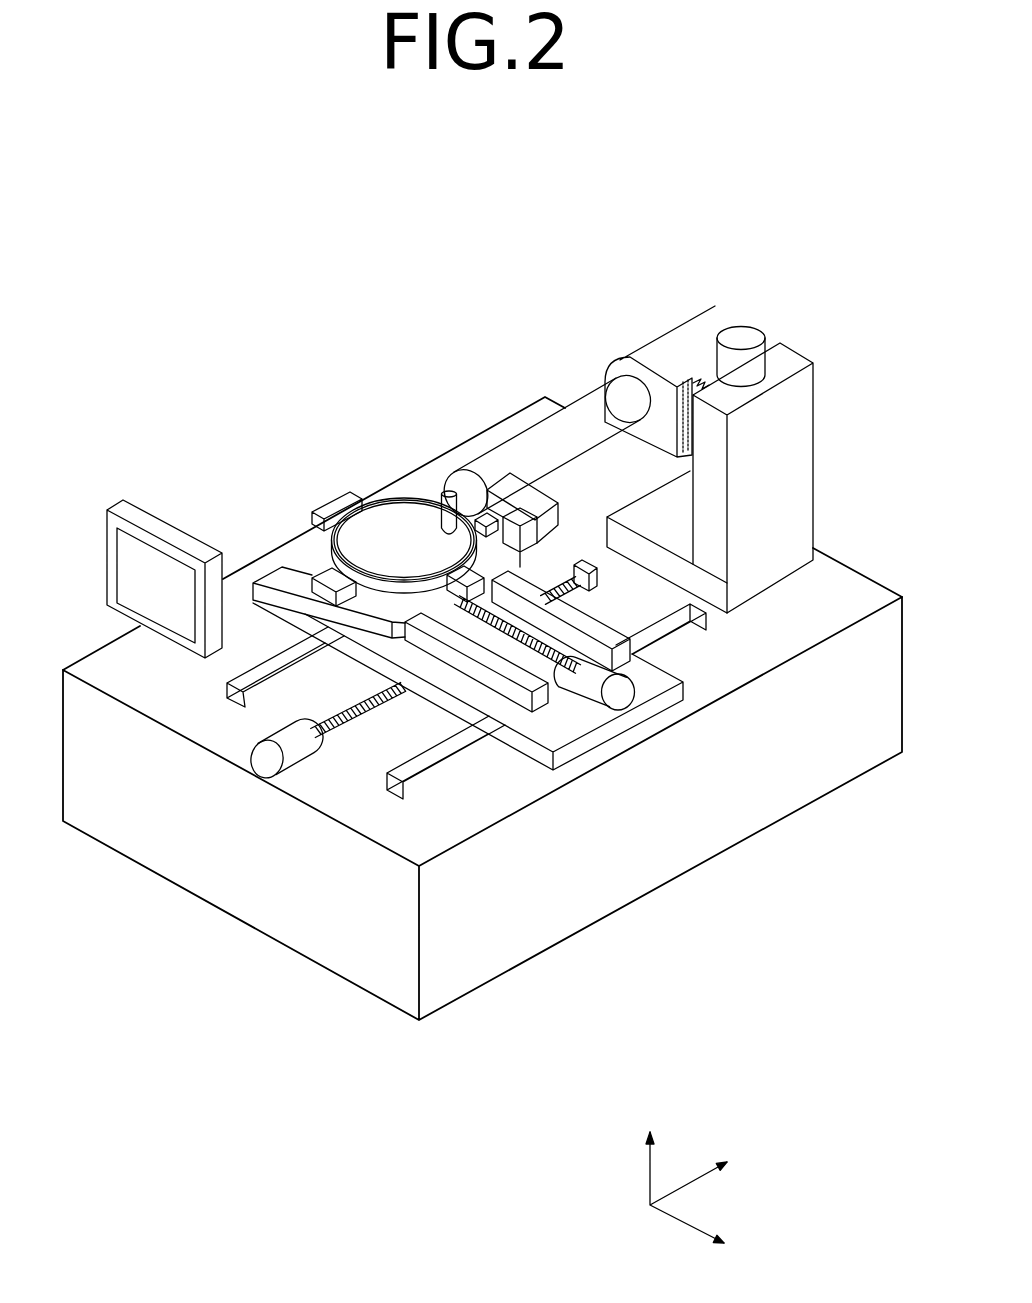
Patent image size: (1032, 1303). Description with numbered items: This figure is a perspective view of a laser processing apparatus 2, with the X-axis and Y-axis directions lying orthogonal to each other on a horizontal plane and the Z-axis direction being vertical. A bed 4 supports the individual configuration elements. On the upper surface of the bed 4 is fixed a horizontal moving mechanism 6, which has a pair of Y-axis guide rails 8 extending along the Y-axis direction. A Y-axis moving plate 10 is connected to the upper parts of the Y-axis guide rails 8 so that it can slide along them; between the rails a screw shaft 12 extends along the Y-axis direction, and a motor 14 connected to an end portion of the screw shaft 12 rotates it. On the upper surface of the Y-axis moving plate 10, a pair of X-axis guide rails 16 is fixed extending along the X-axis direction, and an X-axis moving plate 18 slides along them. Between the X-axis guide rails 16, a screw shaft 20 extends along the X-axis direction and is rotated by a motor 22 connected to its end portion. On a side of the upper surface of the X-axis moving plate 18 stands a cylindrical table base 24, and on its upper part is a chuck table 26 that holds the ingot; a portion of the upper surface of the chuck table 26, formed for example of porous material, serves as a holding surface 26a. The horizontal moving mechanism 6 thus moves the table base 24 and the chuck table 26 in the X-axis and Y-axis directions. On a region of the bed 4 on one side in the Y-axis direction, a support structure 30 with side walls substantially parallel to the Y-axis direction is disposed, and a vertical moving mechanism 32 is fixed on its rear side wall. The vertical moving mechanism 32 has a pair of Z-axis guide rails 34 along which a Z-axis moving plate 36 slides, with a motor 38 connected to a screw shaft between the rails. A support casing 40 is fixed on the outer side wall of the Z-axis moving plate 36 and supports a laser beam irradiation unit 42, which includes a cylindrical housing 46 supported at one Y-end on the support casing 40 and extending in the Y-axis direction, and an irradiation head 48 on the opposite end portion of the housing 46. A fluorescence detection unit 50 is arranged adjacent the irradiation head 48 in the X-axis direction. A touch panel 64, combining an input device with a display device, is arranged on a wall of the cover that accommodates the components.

The laser processing apparatus 2 is at (400, 1050).
The bed 4 is at (865, 590).
The horizontal moving mechanism 6 is at (637, 794).
The Y-axis guide rails 8 is at (255, 686).
The Y-axis moving plate 10 is at (517, 742).
The screw shaft 12 is at (337, 712).
The motor 14 is at (267, 765).
The X-axis guide rails 16 is at (553, 710).
The X-axis moving plate 18 is at (388, 608).
The screw shaft 20 is at (565, 706).
The motor 22 is at (623, 694).
The table base 24 is at (413, 593).
The chuck table 26 is at (388, 489).
The holding surface 26a is at (400, 520).
The support structure 30 is at (800, 424).
The vertical moving mechanism 32 is at (733, 342).
The Z-axis guide rails 34 is at (703, 382).
The Z-axis moving plate 36 is at (690, 375).
The motor 38 is at (743, 336).
The support casing 40 is at (637, 352).
The laser beam irradiation unit 42 is at (547, 427).
The housing 46 is at (568, 418).
The irradiation head 48 is at (449, 490).
The fluorescence detection unit 50 is at (534, 528).
The touch panel 64 is at (133, 557).